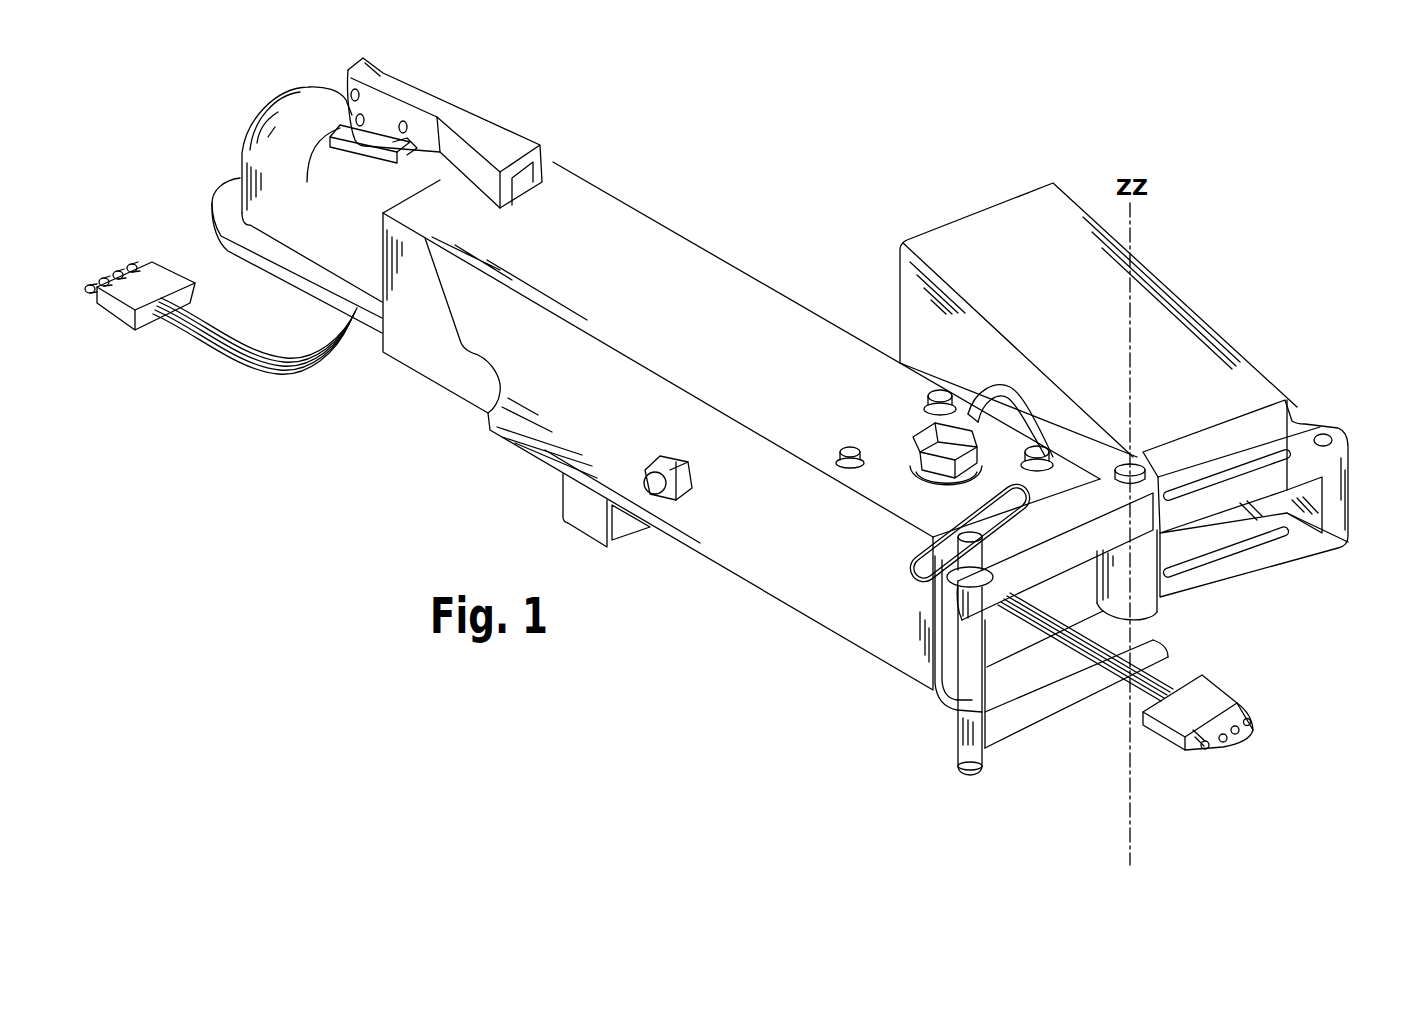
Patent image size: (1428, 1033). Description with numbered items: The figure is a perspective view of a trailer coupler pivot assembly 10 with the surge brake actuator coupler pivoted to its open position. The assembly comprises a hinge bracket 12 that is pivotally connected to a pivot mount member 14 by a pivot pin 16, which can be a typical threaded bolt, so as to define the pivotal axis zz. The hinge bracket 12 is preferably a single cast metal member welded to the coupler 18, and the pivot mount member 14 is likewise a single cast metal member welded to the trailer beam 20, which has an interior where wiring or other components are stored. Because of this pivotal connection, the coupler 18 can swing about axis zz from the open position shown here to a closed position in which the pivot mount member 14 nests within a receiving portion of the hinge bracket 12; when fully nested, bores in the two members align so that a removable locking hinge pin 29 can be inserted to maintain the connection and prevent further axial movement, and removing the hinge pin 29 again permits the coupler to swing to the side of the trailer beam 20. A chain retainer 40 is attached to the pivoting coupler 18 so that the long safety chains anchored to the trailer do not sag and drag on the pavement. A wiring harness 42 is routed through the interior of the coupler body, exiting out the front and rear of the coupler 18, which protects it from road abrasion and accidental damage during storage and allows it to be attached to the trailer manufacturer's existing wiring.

The trailer coupler pivot assembly 10 is at (1167, 775).
The hinge bracket 12 is at (1020, 705).
The pivot mount member 14 is at (1333, 492).
The pivot pin 16 is at (1141, 455).
The coupler 18 is at (683, 290).
The trailer beam 20 is at (1148, 317).
The removable locking hinge pin 29 is at (963, 714).
The chain retainer 40 is at (590, 540).
The wiring harness 42 is at (1163, 680).